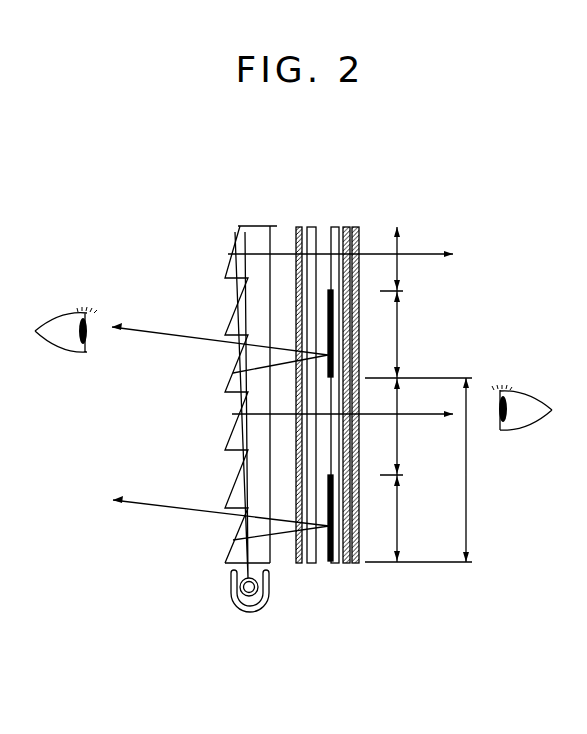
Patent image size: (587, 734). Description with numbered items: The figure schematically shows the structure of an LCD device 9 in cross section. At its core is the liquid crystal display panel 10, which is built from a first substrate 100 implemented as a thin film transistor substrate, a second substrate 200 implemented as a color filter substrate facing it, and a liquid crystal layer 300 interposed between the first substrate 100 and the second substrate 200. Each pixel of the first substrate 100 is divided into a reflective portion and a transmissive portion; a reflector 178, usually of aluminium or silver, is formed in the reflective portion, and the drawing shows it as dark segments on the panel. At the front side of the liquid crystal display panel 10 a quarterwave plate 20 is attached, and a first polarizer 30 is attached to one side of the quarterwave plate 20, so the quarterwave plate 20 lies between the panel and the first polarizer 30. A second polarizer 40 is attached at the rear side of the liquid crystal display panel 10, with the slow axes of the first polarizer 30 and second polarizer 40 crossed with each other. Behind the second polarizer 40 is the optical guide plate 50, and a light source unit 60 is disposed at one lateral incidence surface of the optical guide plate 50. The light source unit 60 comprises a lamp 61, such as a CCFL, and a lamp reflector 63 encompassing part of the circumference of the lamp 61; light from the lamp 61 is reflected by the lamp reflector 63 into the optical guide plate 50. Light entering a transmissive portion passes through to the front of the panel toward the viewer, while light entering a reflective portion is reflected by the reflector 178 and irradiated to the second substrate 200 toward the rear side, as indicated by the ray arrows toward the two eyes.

The LCD device 9 is at (190, 245).
The liquid crystal display panel 10 is at (262, 464).
The quarterwave plate 20 is at (355, 563).
The first polarizer 30 is at (360, 542).
The second polarizer 40 is at (297, 565).
The optical guide plate 50 is at (230, 551).
The light source unit 60 is at (203, 466).
The lamp 61 is at (235, 613).
The lamp reflector 63 is at (262, 613).
The first substrate 100 is at (337, 564).
The second substrate 200 is at (311, 564).
The liquid crystal layer 300 is at (322, 564).
The reflector 178 is at (328, 490).